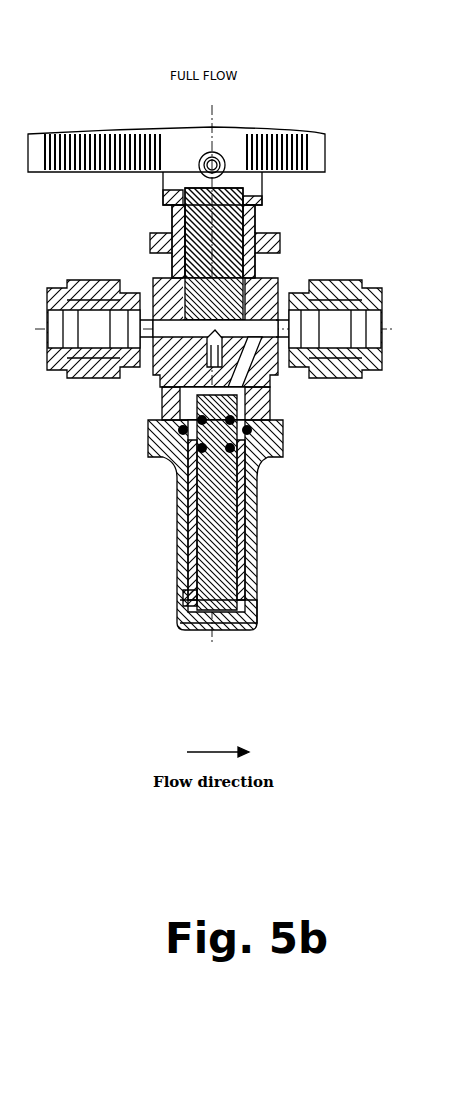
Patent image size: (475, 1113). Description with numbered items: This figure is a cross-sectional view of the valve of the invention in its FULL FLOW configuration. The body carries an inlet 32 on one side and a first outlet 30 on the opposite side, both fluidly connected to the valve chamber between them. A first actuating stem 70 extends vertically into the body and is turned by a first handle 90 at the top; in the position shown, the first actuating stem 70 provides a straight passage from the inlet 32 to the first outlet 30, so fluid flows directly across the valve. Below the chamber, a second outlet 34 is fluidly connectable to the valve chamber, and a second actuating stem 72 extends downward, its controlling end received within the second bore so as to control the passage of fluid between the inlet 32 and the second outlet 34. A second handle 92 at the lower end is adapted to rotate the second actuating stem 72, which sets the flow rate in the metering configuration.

The first handle 90 is at (237, 132).
The first actuating stem 70 is at (257, 260).
The first outlet 30 is at (257, 323).
The inlet 32 is at (157, 325).
The second outlet 34 is at (262, 380).
The second actuating stem 72 is at (257, 492).
The second handle 92 is at (240, 608).